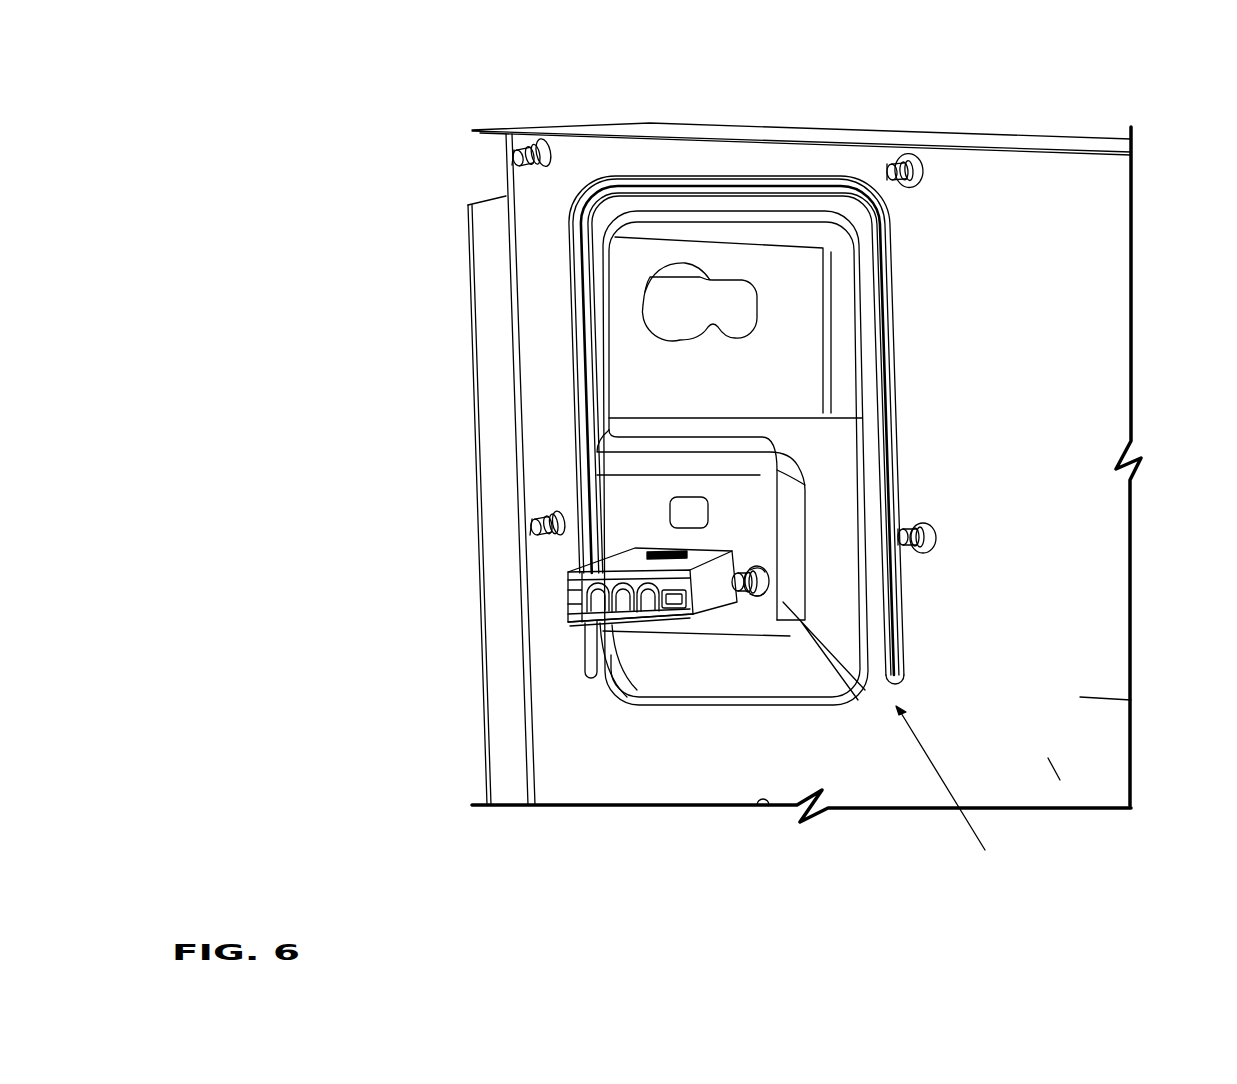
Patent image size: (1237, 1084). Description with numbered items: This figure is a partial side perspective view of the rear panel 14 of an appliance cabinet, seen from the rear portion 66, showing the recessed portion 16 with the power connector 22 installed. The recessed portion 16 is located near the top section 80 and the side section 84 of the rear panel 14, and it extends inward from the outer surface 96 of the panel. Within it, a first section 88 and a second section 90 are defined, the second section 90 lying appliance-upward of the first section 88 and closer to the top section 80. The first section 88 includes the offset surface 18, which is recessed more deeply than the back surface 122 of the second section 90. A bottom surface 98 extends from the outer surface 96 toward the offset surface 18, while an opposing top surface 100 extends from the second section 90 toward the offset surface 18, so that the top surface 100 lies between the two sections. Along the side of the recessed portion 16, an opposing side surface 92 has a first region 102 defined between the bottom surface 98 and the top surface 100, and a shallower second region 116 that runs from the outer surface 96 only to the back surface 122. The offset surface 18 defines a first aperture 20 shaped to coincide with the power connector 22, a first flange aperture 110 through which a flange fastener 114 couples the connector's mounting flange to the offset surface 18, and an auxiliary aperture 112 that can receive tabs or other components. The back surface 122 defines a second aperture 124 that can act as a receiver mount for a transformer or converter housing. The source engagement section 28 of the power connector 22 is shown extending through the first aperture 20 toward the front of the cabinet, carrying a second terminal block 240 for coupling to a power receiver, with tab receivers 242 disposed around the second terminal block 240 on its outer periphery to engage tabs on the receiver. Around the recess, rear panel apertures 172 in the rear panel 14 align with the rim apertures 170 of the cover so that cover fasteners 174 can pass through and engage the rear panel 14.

The rear panel 14 is at (643, 153).
The recessed portion 16 is at (955, 797).
The offset surface 18 is at (668, 685).
The first aperture 20 is at (752, 614).
The power connector 22 is at (752, 625).
The source engagement section 28 is at (657, 622).
The rear portion 66 is at (1080, 697).
The top section 80 is at (1052, 140).
The side section 84 is at (513, 252).
The first section 88 is at (610, 490).
The second section 90 is at (795, 260).
The opposing side surface 92 is at (868, 393).
The outer surface 96 is at (1060, 780).
The bottom surface 98 is at (770, 657).
The top surface 100 is at (690, 443).
The first region 102 is at (848, 585).
The first flange aperture 110 is at (787, 602).
The auxiliary aperture 112 is at (665, 522).
The flange fastener 114 is at (790, 625).
The second region 116 is at (872, 343).
The back surface 122 is at (742, 267).
The second aperture 124 is at (705, 276).
The rim aperture 170 is at (885, 278).
The rear panel aperture 172 is at (556, 150).
The cover fastener 174 is at (524, 150).
The second terminal block 240 is at (590, 582).
The tab receiver 242 is at (710, 620).